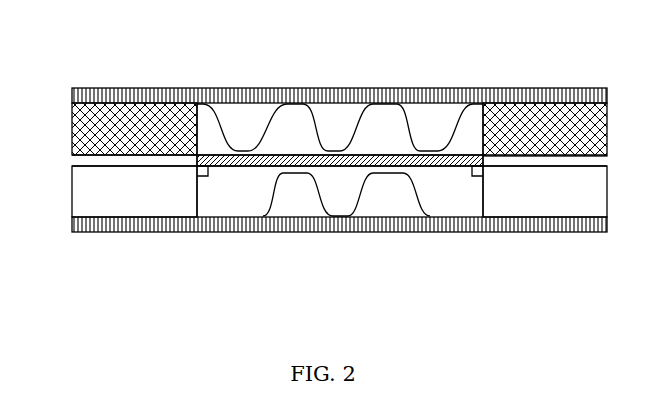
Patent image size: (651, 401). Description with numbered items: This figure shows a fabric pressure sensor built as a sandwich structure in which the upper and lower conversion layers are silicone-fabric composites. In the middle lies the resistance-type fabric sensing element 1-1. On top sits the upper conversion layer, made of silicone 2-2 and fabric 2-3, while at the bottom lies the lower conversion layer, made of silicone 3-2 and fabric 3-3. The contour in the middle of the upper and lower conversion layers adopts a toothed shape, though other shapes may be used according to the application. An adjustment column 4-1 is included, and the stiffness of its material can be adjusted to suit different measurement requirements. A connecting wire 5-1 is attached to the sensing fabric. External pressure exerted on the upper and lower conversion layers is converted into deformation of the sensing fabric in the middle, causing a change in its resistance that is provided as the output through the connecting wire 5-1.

The resistance-type fabric sensing element 1-1 is at (348, 170).
The silicone 2-2 is at (239, 122).
The fabric 2-3 is at (509, 84).
The silicone 3-2 is at (104, 199).
The fabric 3-3 is at (553, 232).
The adjustment column 4-1 is at (67, 119).
The connecting wire 5-1 is at (205, 178).